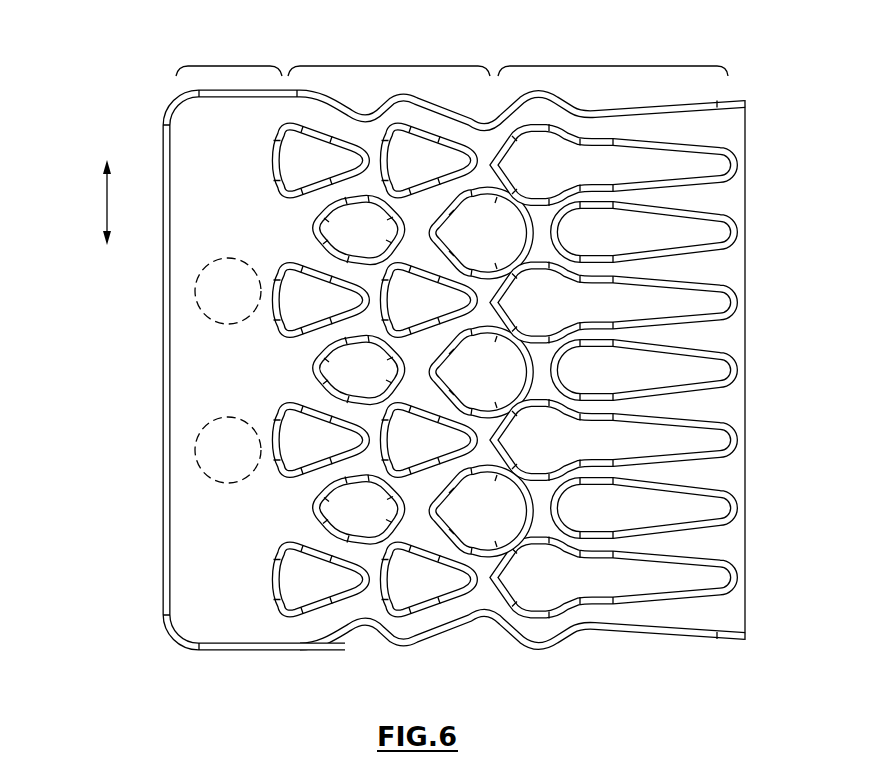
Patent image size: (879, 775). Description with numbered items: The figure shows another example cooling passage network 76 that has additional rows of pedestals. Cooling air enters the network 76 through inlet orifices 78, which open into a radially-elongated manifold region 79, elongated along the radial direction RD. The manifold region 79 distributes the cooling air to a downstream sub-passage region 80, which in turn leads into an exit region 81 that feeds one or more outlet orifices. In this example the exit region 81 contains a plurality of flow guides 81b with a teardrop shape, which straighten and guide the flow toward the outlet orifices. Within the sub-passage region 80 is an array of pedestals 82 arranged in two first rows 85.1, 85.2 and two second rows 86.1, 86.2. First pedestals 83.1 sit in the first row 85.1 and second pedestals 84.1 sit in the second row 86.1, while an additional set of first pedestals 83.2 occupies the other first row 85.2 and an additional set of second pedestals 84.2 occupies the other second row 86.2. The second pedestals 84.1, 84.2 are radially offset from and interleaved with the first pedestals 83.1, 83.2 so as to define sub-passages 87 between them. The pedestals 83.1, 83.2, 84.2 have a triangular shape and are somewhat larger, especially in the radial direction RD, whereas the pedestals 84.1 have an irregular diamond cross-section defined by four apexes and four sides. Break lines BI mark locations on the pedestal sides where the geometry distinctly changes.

The cooling passage network 76 is at (633, 672).
The inlet orifice 78 is at (195, 291).
The radially-elongated manifold region 79 is at (230, 65).
The sub-passage region 80 is at (389, 65).
The exit region 81 is at (611, 65).
The flow guide 81b is at (693, 508).
The array of pedestals 82 is at (286, 521).
The first pedestal 83.1 is at (297, 422).
The first pedestal 83.2 is at (450, 432).
The second pedestal 84.1 is at (342, 503).
The second pedestal 84.2 is at (507, 517).
The first row 85.1 is at (323, 647).
The first row 85.2 is at (423, 647).
The second row 86.1 is at (362, 574).
The second row 86.2 is at (467, 545).
The sub-passage 87 is at (308, 349).
The break line BI is at (297, 122).
The radial direction RD is at (107, 204).